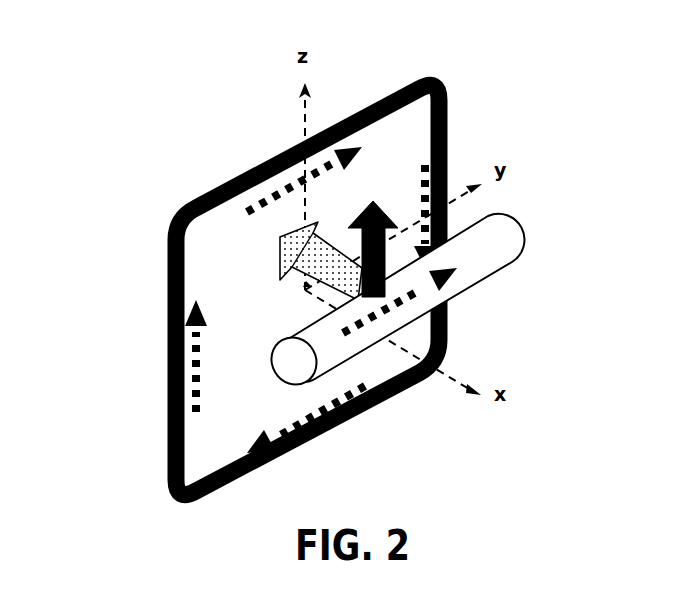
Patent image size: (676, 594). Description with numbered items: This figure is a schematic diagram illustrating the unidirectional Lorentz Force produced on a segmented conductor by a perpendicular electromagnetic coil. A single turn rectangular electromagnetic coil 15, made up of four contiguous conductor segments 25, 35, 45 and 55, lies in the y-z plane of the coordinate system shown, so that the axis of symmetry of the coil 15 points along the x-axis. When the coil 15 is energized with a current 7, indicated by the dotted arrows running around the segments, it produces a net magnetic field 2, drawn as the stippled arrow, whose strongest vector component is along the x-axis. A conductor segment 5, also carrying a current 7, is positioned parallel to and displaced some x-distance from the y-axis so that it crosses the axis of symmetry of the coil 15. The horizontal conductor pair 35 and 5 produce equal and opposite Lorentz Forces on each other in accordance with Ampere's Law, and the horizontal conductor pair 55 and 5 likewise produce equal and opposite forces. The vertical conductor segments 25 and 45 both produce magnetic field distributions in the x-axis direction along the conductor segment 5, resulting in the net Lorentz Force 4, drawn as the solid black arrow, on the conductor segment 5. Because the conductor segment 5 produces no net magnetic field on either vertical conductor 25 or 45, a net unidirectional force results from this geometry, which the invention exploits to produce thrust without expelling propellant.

The net magnetic field 2 is at (281, 254).
The net Lorentz Force 4 is at (373, 203).
The conductor segment 5 is at (521, 241).
The current 7 is at (427, 288).
The single turn rectangular electromagnetic coil 15 is at (142, 256).
The vertical conductor segment 25 is at (168, 360).
The horizontal conductor segment 35 is at (258, 173).
The vertical conductor segment 45 is at (448, 153).
The horizontal conductor segment 55 is at (352, 421).